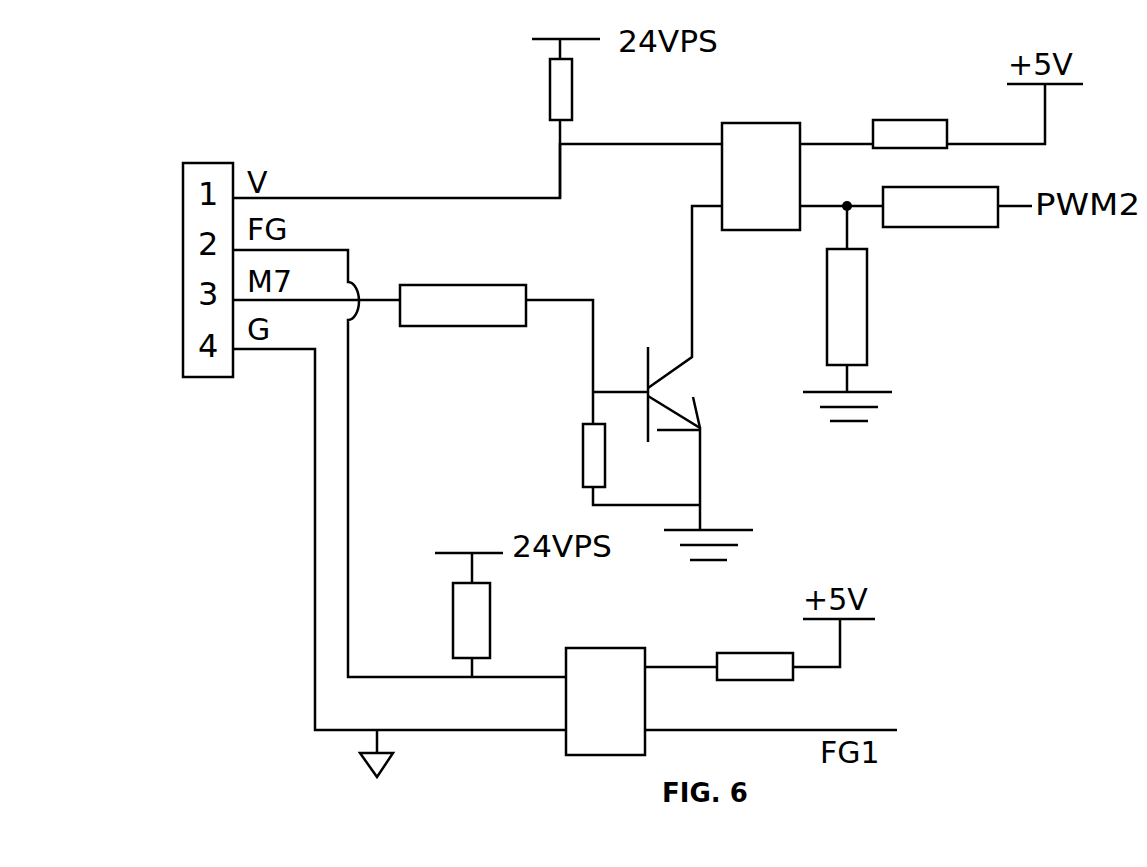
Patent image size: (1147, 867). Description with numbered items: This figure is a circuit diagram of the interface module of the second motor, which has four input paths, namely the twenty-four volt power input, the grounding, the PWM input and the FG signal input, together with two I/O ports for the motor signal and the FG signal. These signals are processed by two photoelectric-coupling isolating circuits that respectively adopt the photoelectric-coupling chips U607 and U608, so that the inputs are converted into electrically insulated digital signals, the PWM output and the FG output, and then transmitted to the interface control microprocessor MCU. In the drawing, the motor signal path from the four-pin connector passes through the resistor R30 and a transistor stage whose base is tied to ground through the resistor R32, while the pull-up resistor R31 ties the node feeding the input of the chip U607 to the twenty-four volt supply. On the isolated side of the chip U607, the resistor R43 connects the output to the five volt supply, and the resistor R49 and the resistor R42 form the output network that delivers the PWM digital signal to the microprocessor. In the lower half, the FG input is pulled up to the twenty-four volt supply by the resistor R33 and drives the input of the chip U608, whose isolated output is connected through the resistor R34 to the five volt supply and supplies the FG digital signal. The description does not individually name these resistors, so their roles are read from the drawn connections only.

The resistor R30 is at (463, 327).
The pull-up resistor R31 is at (527, 89).
The resistor R32 is at (561, 455).
The pull-up resistor R33 is at (440, 620).
The resistor R34 is at (755, 648).
The resistor R42 is at (812, 307).
The resistor R43 is at (910, 115).
The resistor R49 is at (940, 226).
The photoelectric-coupling chip U607 is at (766, 157).
The photoelectric-coupling chip U608 is at (605, 682).